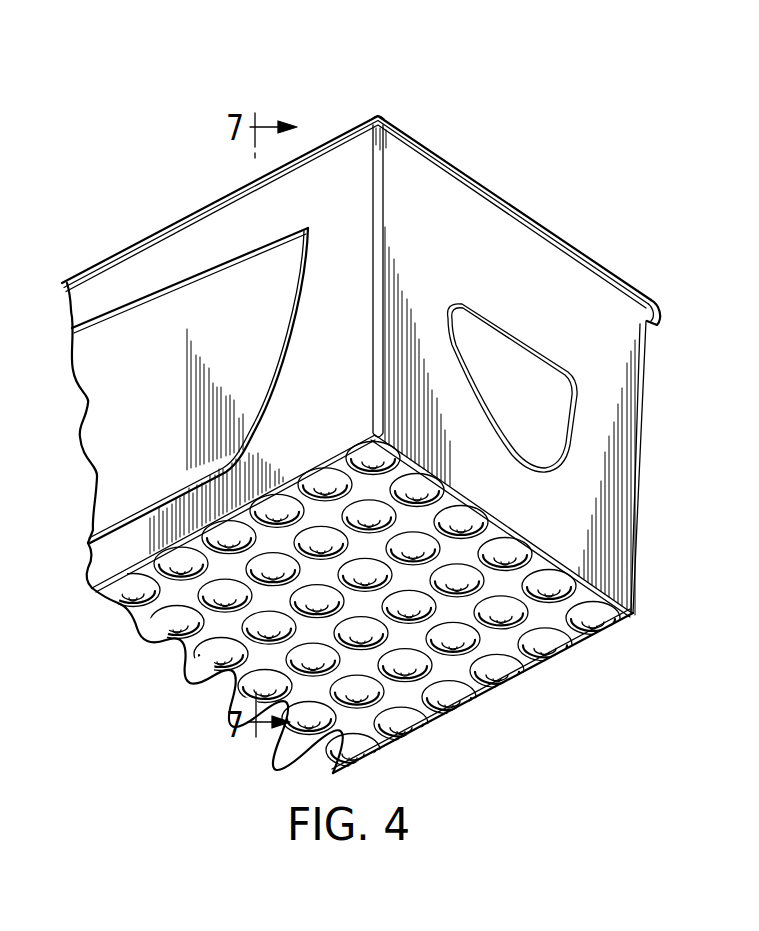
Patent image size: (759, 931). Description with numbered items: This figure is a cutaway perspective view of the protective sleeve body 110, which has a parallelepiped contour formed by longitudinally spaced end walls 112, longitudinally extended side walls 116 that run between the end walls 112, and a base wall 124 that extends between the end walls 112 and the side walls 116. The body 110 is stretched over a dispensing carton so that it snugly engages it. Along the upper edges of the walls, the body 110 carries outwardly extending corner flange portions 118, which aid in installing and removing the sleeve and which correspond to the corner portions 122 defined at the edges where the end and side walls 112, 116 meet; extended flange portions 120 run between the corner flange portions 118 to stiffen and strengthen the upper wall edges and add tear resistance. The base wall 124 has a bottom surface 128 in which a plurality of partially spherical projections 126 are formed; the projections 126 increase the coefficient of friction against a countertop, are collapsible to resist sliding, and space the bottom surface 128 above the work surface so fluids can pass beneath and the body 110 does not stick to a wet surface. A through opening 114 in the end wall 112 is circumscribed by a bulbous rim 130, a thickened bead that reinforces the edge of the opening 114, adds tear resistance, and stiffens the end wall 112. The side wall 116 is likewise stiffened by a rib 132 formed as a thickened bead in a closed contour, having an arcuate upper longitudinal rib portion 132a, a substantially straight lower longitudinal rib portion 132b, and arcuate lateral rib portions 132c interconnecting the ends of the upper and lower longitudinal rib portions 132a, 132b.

The body 110 is at (382, 414).
The end wall 112 is at (613, 348).
The through opening 114 is at (552, 441).
The side wall 116 is at (353, 186).
The corner flange portion 118 is at (397, 120).
The extended flange portion 120 is at (295, 158).
The corner portion 122 is at (378, 117).
The base wall 124 is at (433, 710).
The projection 126 is at (593, 615).
The bottom surface 128 is at (530, 657).
The bulbous rim 130 is at (578, 414).
The rib 132 is at (320, 278).
The upper longitudinal rib portion 132a is at (115, 308).
The lower longitudinal rib portion 132b is at (98, 564).
The lateral rib portion 132c is at (276, 386).